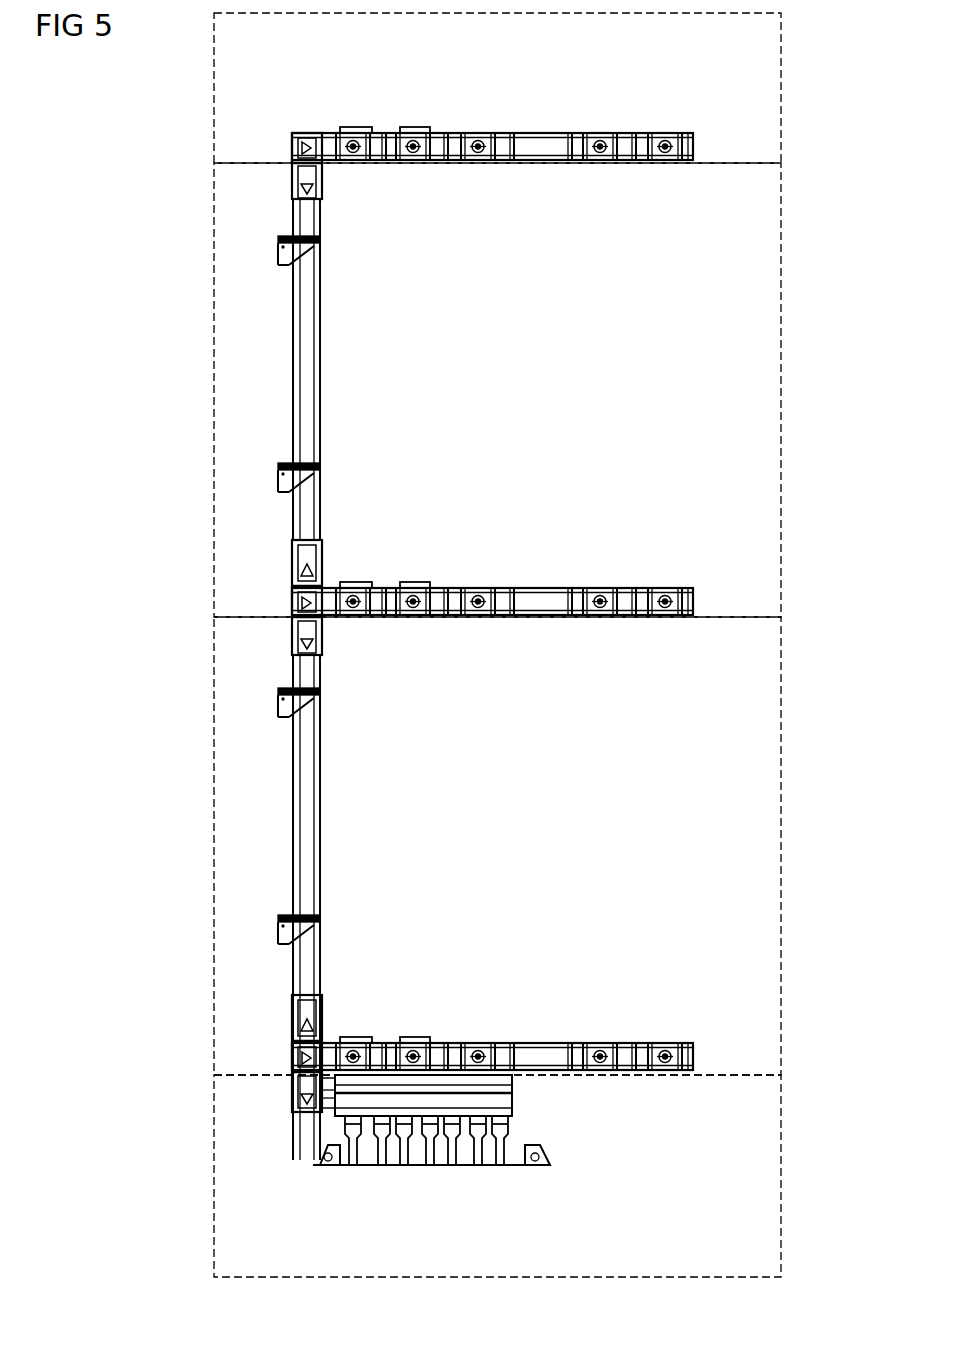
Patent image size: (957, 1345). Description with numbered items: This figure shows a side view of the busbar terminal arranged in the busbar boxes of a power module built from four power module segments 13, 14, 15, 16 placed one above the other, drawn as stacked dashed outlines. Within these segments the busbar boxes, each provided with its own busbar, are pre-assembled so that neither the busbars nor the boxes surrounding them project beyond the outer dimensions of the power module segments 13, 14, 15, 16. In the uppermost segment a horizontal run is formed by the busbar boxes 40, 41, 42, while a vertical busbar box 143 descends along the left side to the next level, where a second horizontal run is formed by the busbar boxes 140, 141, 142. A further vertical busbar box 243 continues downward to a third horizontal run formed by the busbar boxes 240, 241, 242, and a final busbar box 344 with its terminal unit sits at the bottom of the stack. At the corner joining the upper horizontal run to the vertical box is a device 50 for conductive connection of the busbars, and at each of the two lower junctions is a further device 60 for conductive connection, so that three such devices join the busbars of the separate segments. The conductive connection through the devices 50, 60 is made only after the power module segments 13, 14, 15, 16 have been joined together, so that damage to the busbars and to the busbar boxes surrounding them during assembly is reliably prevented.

The power module segment 13 is at (765, 78).
The power module segment 14 is at (765, 325).
The power module segment 15 is at (765, 830).
The power module segment 16 is at (765, 1193).
The busbar box 40 is at (374, 163).
The busbar box 41 is at (537, 160).
The busbar box 42 is at (648, 160).
The device for conductive connection of the busbars 50 is at (286, 147).
The device for conductive connection of the busbars 60 is at (286, 603).
The busbar box 140 is at (404, 616).
The busbar box 141 is at (540, 616).
The busbar box 142 is at (648, 616).
The busbar box 143 is at (304, 384).
The busbar box 240 is at (386, 1043).
The busbar box 241 is at (540, 1048).
The busbar box 242 is at (639, 1043).
The busbar box 243 is at (304, 815).
The busbar box 344 is at (303, 1163).